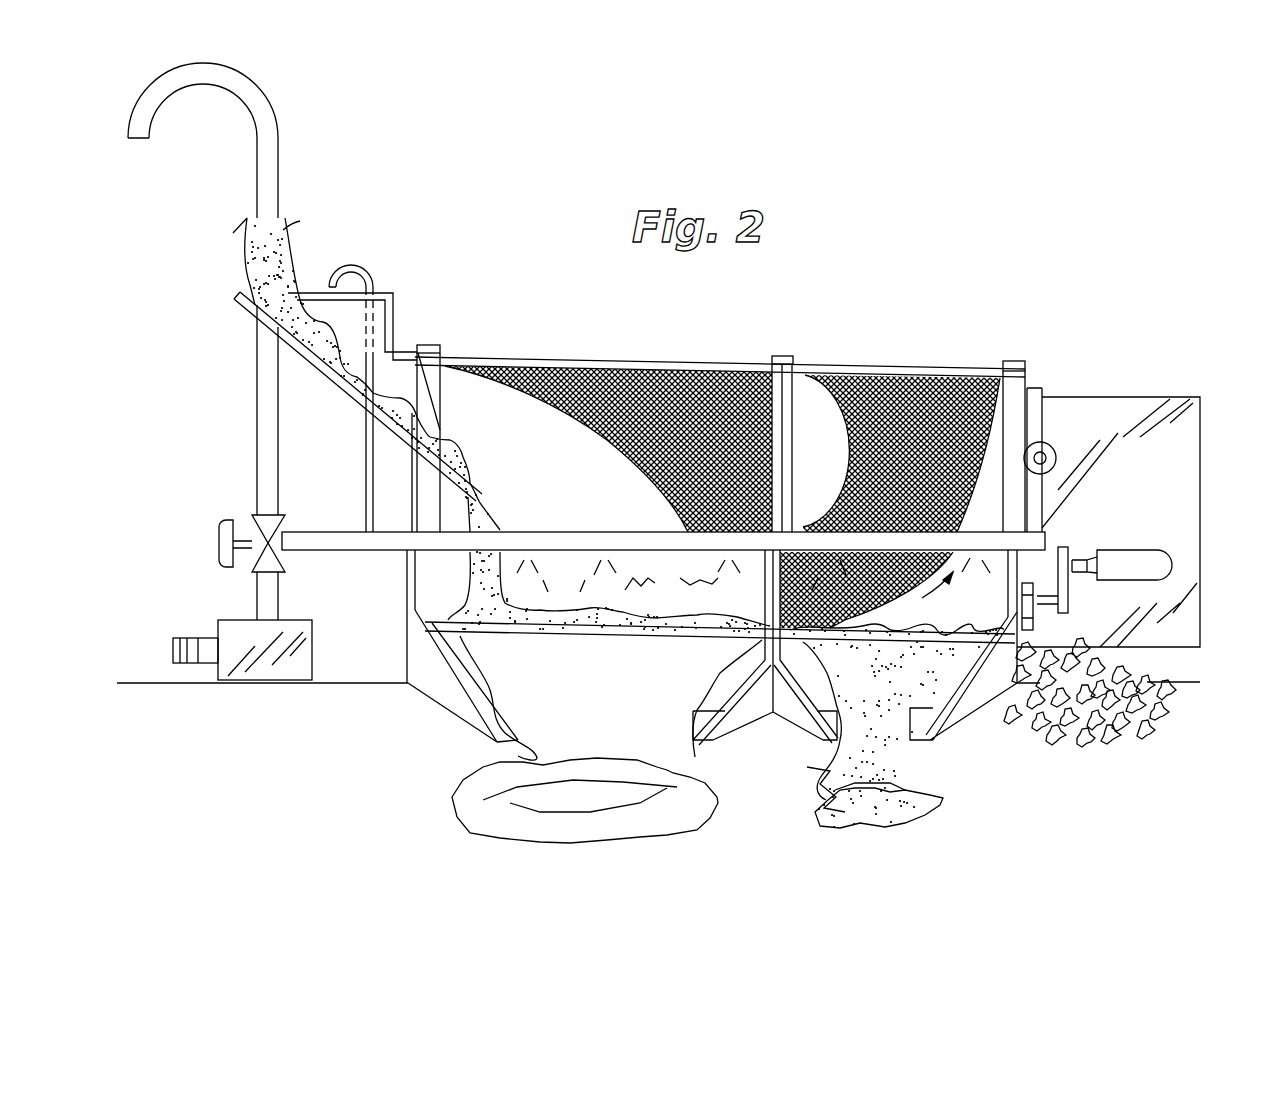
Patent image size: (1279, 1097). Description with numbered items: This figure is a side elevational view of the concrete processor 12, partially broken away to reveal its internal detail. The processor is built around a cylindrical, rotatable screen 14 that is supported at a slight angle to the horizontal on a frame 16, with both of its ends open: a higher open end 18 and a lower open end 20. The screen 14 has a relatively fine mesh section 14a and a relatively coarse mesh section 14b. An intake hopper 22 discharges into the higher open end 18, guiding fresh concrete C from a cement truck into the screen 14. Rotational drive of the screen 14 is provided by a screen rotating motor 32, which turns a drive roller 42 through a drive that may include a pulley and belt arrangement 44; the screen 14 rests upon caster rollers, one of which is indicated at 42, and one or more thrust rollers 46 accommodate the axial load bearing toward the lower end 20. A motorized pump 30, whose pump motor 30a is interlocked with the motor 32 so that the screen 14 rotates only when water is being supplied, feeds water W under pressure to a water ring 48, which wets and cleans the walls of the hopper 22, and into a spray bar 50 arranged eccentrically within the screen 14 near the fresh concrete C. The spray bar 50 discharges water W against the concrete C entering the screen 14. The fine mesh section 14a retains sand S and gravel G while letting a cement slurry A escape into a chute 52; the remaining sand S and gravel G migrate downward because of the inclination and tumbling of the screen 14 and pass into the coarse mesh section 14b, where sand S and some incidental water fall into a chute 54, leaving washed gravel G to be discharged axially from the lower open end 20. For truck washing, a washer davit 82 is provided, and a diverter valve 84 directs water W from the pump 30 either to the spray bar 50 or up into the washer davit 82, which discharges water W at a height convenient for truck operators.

The concrete processor 12 is at (1007, 198).
The cylindrical rotatable screen 14 is at (833, 220).
The fine mesh screen section 14a is at (712, 383).
The coarse mesh screen section 14b is at (820, 393).
The frame 16 is at (407, 607).
The higher open end 18 is at (312, 447).
The lower open end 20 is at (1097, 503).
The intake hopper 22 is at (300, 342).
The motorized pump 30 is at (243, 681).
The pump motor 30a is at (282, 683).
The screen rotating motor 32 is at (1157, 550).
The drive roller 42 is at (1033, 620).
The pulley and belt arrangement 44 is at (1090, 530).
The thrust roller 46 is at (1064, 440).
The water ring 48 is at (302, 290).
The spray bar 50 is at (378, 542).
The chute 52 is at (443, 695).
The chute 54 is at (795, 713).
The washer davit 82 is at (258, 82).
The diverter valve 84 is at (253, 563).
The fresh concrete C is at (240, 240).
The cement slurry A is at (648, 825).
The sand S is at (890, 750).
The gravel G is at (1133, 720).
The water W is at (753, 587).